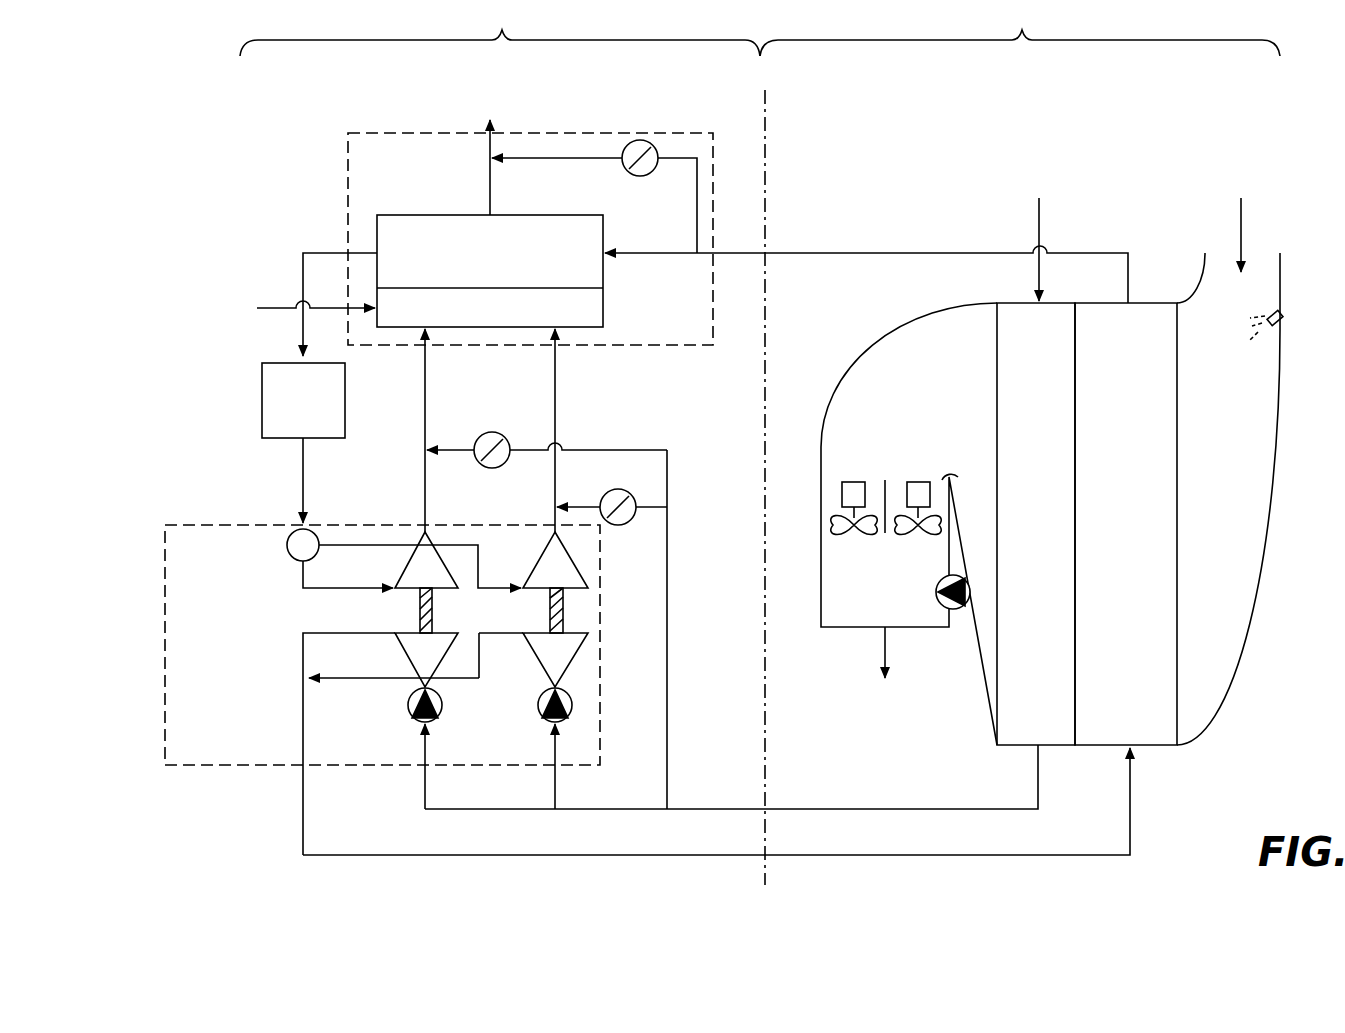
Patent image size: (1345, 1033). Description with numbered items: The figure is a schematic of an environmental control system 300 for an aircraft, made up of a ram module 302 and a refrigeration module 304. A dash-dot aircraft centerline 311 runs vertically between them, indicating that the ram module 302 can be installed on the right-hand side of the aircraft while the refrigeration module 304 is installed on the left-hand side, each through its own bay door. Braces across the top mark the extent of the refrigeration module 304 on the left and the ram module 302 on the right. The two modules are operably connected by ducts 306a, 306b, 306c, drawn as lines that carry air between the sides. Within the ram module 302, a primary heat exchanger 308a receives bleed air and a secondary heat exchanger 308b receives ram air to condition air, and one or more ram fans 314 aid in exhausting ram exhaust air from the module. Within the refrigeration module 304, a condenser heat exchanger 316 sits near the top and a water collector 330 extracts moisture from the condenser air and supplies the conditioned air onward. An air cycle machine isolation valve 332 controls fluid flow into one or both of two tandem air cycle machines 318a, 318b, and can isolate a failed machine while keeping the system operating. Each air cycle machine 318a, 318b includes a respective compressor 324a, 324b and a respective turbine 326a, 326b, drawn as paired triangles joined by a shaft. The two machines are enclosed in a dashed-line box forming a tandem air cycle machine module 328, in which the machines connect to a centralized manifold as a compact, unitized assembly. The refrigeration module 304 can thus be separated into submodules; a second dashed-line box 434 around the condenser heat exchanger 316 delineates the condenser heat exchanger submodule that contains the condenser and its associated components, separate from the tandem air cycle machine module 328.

The environmental control system 300 is at (146, 170).
The ram module 302 is at (1020, 28).
The refrigeration module 304 is at (500, 28).
The duct 306a is at (840, 253).
The duct 306b is at (803, 809).
The duct 306c is at (857, 855).
The primary heat exchanger 308a is at (1036, 524).
The secondary heat exchanger 308b is at (1126, 524).
The aircraft centerline 311 is at (766, 152).
The ram fan 314 is at (913, 482).
The condenser heat exchanger 316 is at (490, 271).
The first air cycle machine 318a is at (398, 618).
The second air cycle machine 318b is at (574, 612).
The first compressor 324a is at (417, 648).
The second compressor 324b is at (547, 648).
The first turbine 326a is at (405, 562).
The second turbine 326b is at (537, 562).
The tandem air cycle machine module 328 is at (164, 583).
The water collector 330 is at (303, 400).
The air cycle machine isolation valve 332 is at (287, 545).
The mixer assembly 434 is at (347, 197).